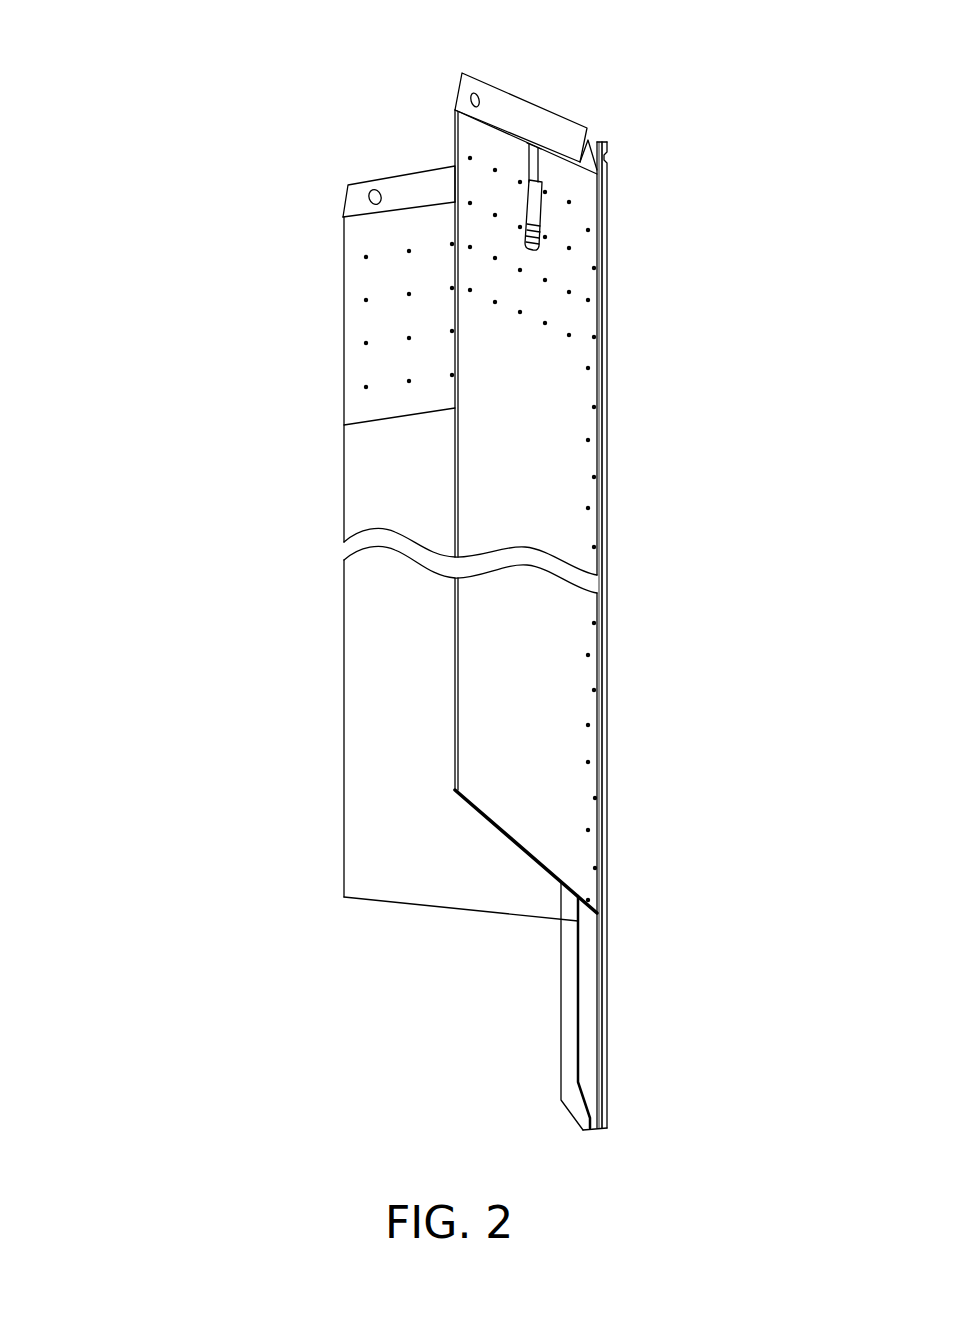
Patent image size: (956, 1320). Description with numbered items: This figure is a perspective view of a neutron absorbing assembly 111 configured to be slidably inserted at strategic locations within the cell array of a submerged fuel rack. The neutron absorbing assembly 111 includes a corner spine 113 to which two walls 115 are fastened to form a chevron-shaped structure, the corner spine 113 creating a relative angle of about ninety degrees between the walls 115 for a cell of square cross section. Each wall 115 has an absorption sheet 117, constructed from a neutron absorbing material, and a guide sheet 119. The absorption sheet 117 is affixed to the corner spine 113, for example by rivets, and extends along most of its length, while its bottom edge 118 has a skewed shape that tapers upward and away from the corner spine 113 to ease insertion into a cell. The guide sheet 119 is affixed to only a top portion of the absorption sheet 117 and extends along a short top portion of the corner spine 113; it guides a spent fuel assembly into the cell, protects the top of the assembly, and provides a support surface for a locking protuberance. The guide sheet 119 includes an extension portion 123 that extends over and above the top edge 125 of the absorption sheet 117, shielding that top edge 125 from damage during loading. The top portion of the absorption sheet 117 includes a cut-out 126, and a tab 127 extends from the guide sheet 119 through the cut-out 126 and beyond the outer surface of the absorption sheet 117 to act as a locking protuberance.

The neutron absorbing assembly 111 is at (228, 68).
The corner spine 113 is at (608, 258).
The wall 115 is at (455, 493).
The absorption sheet 117 is at (418, 740).
The bottom edge 118 is at (517, 845).
The guide sheet 119 is at (349, 190).
The extension portion 123 is at (398, 187).
The top edge 125 is at (487, 120).
The cut-out 126 is at (528, 183).
The tab 127 is at (538, 207).